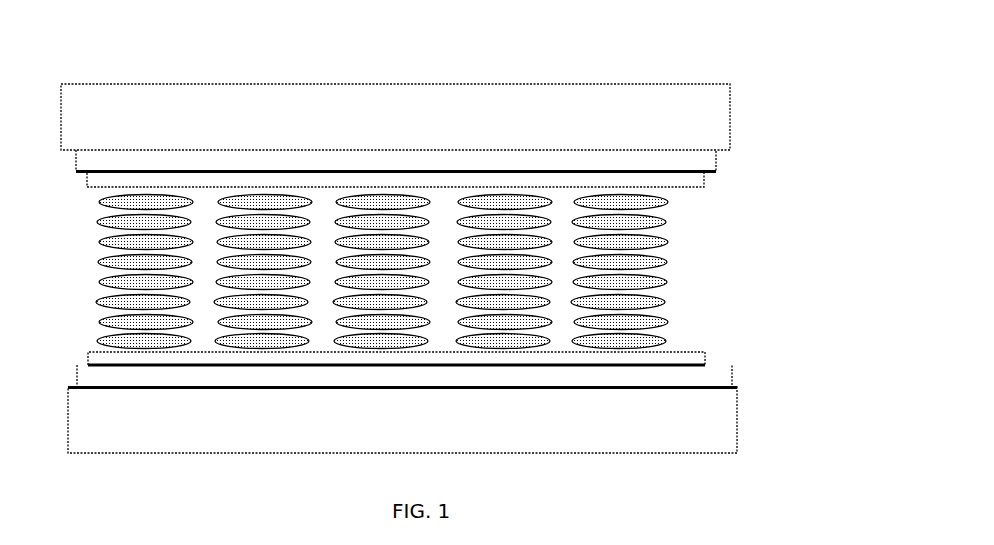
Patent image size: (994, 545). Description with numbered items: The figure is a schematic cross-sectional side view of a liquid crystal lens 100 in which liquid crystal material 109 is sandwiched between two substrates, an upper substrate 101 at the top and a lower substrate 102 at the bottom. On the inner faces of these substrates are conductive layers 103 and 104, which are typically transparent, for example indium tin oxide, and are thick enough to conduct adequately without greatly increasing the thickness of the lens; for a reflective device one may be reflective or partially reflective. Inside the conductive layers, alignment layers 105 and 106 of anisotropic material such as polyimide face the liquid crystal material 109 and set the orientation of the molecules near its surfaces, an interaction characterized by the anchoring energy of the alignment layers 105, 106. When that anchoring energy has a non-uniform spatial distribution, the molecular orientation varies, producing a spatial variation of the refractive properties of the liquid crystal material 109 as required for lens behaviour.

The liquid crystal lens 100 is at (590, 52).
The upper substrate 101 is at (716, 115).
The lower substrate 102 is at (732, 433).
The conductive layer 103 is at (708, 165).
The conductive layer 104 is at (723, 375).
The alignment layer 105 is at (88, 178).
The alignment layer 106 is at (90, 357).
The liquid crystal material 109 is at (663, 222).